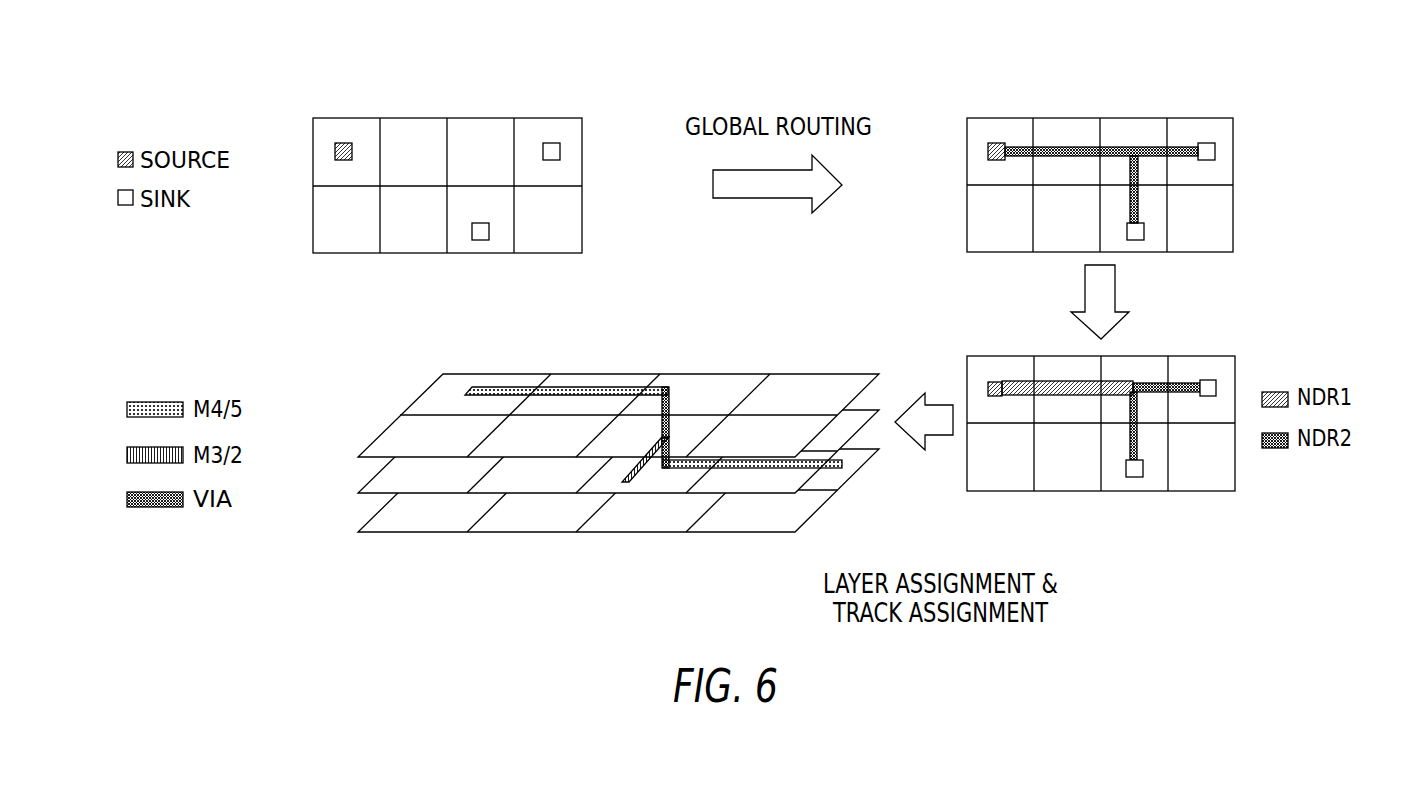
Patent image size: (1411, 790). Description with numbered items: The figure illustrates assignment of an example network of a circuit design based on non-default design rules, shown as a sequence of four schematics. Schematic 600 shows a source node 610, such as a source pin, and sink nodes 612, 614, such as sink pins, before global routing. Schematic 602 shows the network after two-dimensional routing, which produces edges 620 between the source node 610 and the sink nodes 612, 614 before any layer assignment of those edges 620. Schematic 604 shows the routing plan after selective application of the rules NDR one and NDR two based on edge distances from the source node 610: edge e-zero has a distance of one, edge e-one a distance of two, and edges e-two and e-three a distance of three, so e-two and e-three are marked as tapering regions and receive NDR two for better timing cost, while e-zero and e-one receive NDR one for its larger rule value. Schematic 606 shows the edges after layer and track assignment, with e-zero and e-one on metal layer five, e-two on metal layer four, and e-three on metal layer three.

The schematic 600 is at (290, 82).
The schematic 602 is at (943, 83).
The schematic 604 is at (948, 330).
The schematic 606 is at (364, 363).
The source node 610 is at (334, 149).
The sink node 612 is at (561, 151).
The sink node 614 is at (488, 231).
The edges 620 is at (1083, 147).